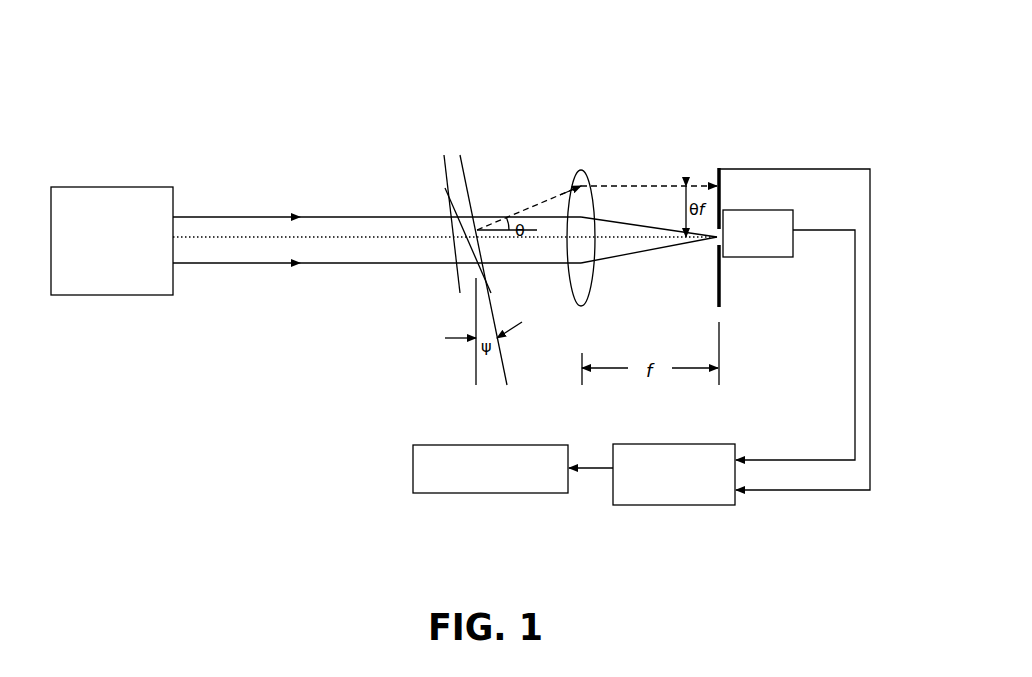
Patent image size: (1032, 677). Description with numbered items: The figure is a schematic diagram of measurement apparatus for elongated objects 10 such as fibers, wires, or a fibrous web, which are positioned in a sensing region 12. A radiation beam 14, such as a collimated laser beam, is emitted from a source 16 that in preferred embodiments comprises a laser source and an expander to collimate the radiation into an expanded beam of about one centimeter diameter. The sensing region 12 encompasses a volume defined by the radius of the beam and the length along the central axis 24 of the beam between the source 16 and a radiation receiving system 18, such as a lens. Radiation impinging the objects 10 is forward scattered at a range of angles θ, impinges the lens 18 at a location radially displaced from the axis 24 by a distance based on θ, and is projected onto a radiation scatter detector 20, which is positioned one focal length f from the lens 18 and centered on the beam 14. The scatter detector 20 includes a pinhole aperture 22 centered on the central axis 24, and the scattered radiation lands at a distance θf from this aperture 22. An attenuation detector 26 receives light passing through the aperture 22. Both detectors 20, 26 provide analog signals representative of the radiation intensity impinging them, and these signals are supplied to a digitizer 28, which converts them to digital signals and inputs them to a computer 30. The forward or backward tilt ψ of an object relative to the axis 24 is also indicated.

The elongated objects 10 is at (467, 190).
The sensing region 12 is at (418, 273).
The radiation beam 14 is at (407, 225).
The source 16 is at (115, 295).
The radiation receiving system 18 is at (592, 297).
The radiation scatter detector 20 is at (717, 183).
The pinhole aperture 22 is at (717, 240).
The central axis 24 is at (296, 238).
The attenuation detector 26 is at (778, 258).
The digitizer 28 is at (663, 505).
The computer 30 is at (482, 493).